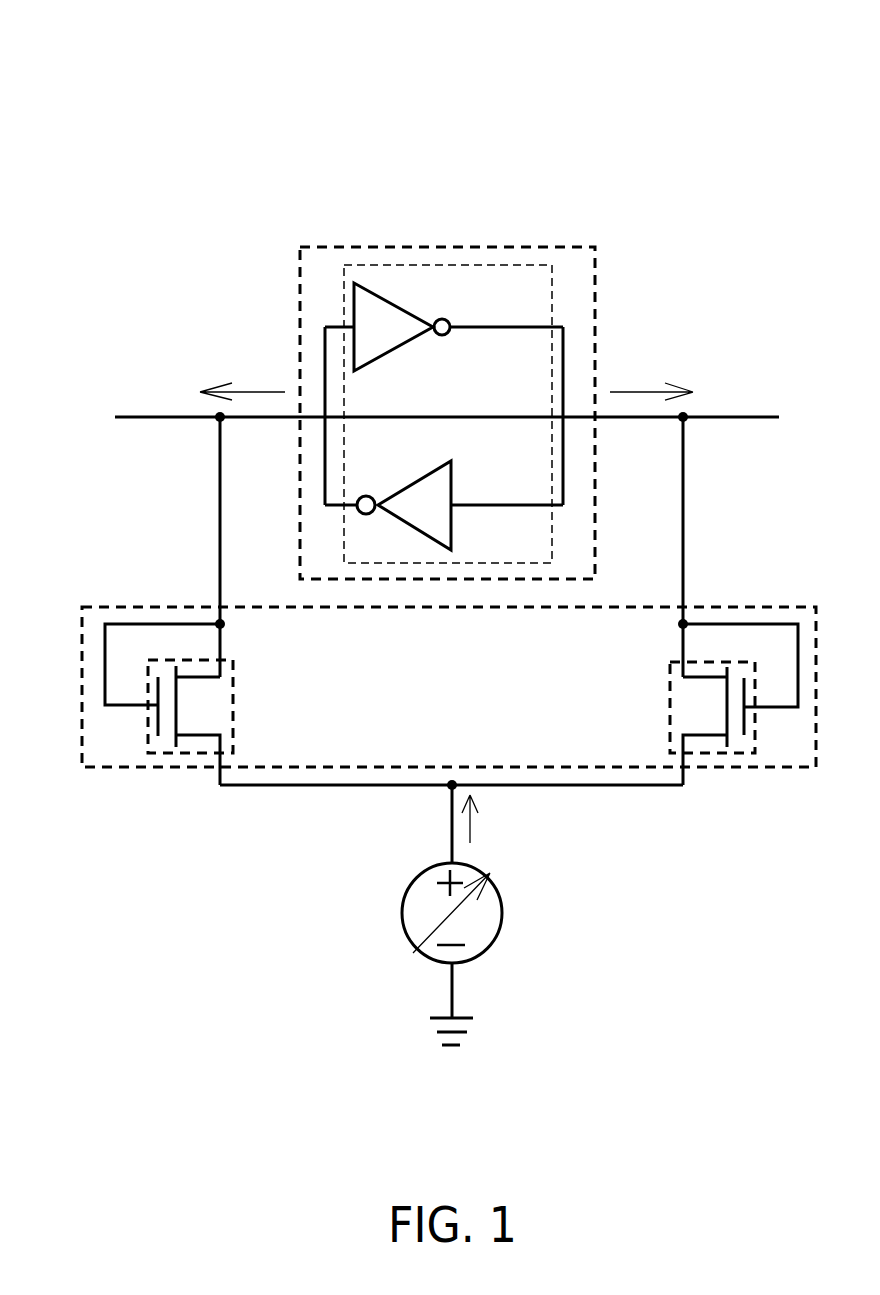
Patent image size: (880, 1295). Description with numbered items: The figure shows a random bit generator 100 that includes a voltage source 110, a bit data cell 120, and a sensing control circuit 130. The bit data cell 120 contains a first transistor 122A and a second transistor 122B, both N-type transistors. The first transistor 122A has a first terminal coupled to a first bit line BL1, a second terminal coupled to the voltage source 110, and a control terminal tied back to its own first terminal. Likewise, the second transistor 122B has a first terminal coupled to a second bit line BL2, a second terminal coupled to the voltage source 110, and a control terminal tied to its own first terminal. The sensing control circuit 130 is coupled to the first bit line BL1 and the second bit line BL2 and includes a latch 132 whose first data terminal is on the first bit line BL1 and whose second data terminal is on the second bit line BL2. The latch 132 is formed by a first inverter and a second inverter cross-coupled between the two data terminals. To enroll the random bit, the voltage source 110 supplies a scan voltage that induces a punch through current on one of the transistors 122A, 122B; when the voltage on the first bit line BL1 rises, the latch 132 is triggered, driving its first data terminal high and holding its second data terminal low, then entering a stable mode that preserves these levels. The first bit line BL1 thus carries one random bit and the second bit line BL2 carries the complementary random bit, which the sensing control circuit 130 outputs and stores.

The random bit generator 100 is at (668, 95).
The voltage source 110 is at (503, 915).
The bit data cell 120 is at (770, 607).
The first transistor 122A is at (233, 715).
The second transistor 122B is at (670, 715).
The sensing control circuit 130 is at (392, 247).
The latch 132 is at (502, 265).
The first bit line BL1 is at (155, 417).
The second bit line BL2 is at (738, 417).